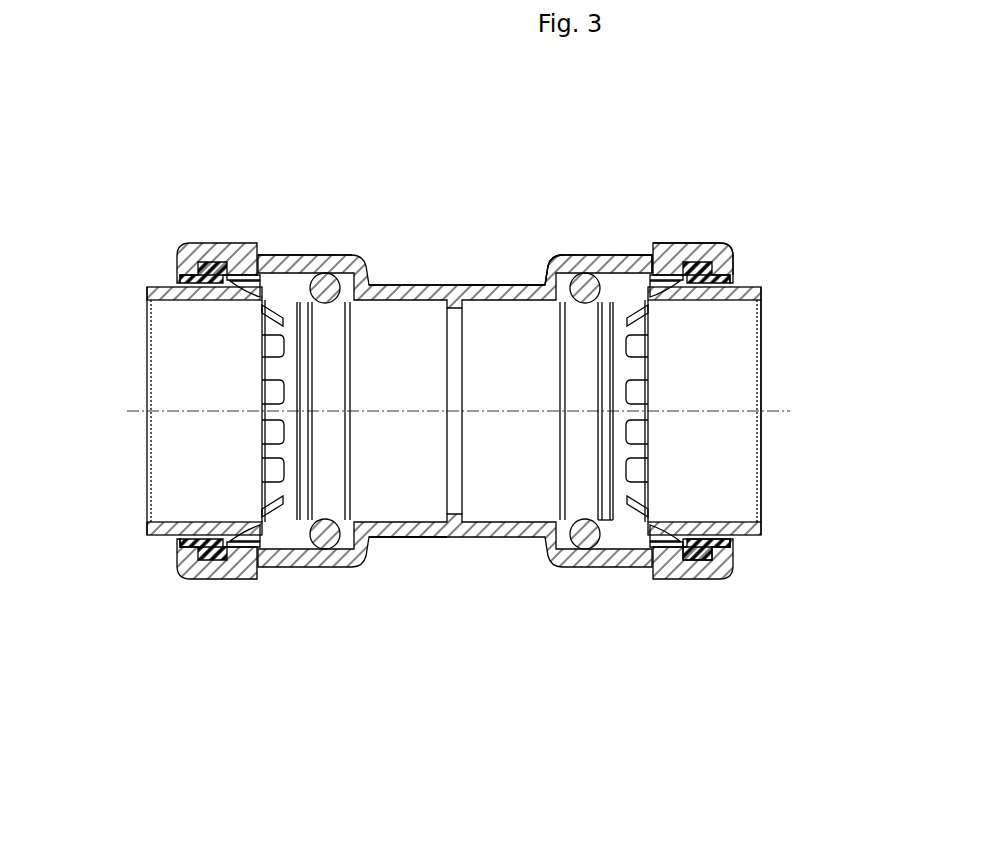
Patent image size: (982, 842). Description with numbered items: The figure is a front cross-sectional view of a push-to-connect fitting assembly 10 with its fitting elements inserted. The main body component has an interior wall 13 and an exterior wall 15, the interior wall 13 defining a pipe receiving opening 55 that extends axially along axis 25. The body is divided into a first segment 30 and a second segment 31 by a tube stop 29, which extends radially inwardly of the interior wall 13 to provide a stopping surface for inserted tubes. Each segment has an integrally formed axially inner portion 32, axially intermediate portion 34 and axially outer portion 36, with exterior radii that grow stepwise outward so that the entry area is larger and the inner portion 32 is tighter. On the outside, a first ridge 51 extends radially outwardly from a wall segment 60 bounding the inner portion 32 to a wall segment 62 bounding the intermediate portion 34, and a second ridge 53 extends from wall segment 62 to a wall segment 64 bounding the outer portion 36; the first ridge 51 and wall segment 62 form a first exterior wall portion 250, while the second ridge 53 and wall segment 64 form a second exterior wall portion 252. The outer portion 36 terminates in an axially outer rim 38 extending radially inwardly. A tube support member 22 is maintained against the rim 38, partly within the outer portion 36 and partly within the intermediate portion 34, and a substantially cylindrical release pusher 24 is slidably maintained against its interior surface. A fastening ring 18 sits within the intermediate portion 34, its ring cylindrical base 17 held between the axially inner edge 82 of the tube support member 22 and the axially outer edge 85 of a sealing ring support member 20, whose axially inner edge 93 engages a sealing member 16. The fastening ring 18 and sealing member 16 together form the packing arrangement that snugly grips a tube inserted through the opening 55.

The push-to-connect fitting assembly 10 is at (470, 120).
The interior wall 13 is at (406, 520).
The exterior wall 15 is at (404, 289).
The sealing member 16 is at (575, 535).
The ring cylindrical base 17 is at (258, 545).
The fastening ring 18 is at (623, 545).
The sealing ring support member 20 is at (612, 540).
The tube support member 22 is at (684, 545).
The release pusher 24 is at (752, 536).
The axis 25 is at (127, 409).
The tube stop 29 is at (456, 522).
The first segment 30 is at (312, 192).
The second segment 31 is at (678, 192).
The axially inner portion 32 is at (401, 553).
The axially intermediate portion 34 is at (317, 578).
The axially outer portion 36 is at (229, 601).
The axially outer rim 38 is at (722, 263).
The first ridge 51 is at (546, 277).
The second ridge 53 is at (650, 258).
The pipe receiving opening 55 is at (801, 455).
The wall segment 60 is at (503, 286).
The wall segment 62 is at (596, 275).
The wall segment 64 is at (700, 244).
The axially inner edge 82 is at (258, 274).
The axially outer edge 85 is at (256, 283).
The axially inner edge 93 is at (594, 522).
The first exterior wall portion 250 is at (584, 190).
The second exterior wall portion 252 is at (680, 193).